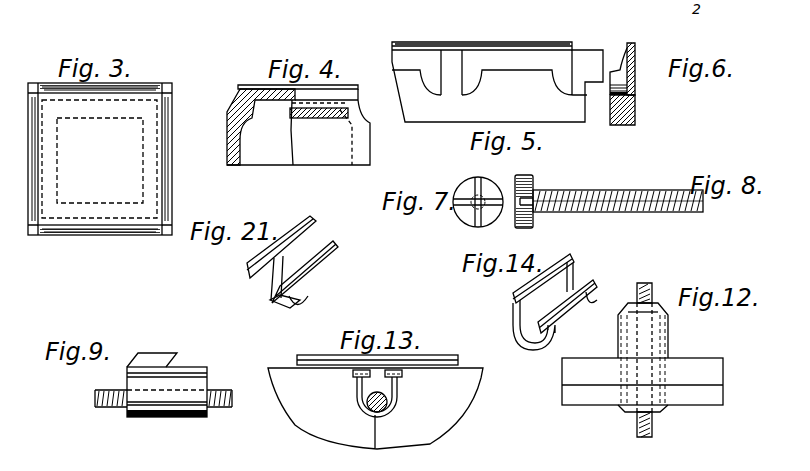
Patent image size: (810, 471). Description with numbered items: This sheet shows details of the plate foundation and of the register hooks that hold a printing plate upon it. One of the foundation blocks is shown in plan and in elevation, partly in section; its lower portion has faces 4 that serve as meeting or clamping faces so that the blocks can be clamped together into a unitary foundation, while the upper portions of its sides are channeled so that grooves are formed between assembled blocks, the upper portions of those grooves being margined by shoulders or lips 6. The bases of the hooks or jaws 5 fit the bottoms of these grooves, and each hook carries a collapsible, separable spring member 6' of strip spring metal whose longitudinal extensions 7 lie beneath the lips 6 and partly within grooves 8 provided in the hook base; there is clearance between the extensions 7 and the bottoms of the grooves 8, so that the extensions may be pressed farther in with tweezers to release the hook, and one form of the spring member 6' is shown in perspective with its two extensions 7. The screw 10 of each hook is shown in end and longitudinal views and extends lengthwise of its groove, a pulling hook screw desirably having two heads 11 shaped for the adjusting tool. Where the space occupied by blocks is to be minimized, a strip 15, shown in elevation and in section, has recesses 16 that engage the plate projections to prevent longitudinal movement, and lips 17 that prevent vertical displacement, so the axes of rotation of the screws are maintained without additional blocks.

In FIG. 4, the faces 4 is at (310, 127).
In FIG. 9, the hooks or jaws 5 is at (163, 416).
In FIG. 13, the hooks or jaws 5 is at (375, 393).
In FIG. 12, the hooks or jaws 5 is at (708, 376).
In FIG. 4, the shoulders or lips 6 is at (287, 79).
In FIG. 21, the spring member 6' is at (279, 282).
In FIG. 14, the spring member 6' is at (555, 322).
In FIG. 21, the longitudinal extensions 7 is at (249, 268).
In FIG. 13, the longitudinal extensions 7 is at (356, 375).
In FIG. 14, the longitudinal extensions 7 is at (541, 285).
In FIG. 9, the grooves 8 is at (207, 373).
In FIG. 13, the grooves 8 is at (358, 386).
In FIG. 8, the screw 10 is at (645, 213).
In FIG. 9, the screw 10 is at (187, 450).
In FIG. 13, the screw 10 is at (388, 407).
In FIG. 12, the screw 10 is at (652, 428).
In FIG. 12, the heads 11 is at (636, 340).
In FIG. 5, the strip 15 is at (546, 85).
In FIG. 6, the strip 15 is at (635, 105).
In FIG. 5, the recesses 16 is at (448, 62).
In FIG. 5, the lips 17 is at (516, 47).
In FIG. 6, the lips 17 is at (626, 43).